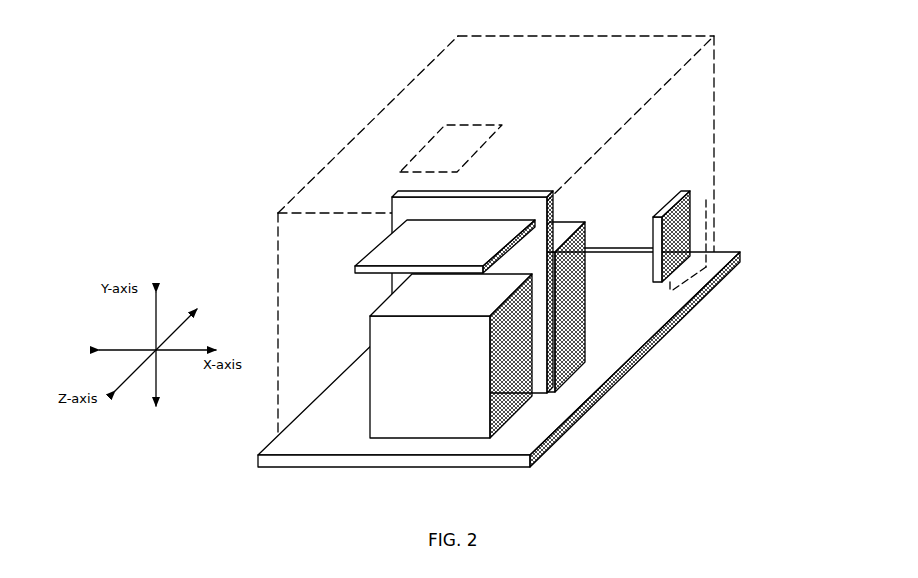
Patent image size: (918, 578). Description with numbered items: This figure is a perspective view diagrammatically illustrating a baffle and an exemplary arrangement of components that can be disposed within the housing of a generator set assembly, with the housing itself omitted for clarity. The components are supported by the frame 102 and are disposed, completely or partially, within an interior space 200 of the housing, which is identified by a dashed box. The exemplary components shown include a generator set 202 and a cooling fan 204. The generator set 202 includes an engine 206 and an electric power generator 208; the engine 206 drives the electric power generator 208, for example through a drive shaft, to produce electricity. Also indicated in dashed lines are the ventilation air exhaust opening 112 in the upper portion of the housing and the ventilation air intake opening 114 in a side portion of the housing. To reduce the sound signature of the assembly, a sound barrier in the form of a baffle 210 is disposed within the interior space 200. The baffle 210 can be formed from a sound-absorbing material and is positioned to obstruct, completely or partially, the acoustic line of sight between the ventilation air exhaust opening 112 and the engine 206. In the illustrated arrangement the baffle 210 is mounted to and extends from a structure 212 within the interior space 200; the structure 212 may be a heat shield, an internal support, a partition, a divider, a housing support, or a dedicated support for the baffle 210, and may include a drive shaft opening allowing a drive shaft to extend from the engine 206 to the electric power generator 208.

The interior space 200 is at (413, 80).
The generator set 202 is at (333, 255).
The ventilation air exhaust opening 112 is at (430, 142).
The frame 102 is at (610, 364).
The electric power generator 208 is at (573, 310).
The structure 212 is at (391, 213).
The engine 206 is at (510, 402).
The baffle 210 is at (485, 226).
The cooling fan 204 is at (680, 190).
The ventilation air intake opening 114 is at (709, 233).